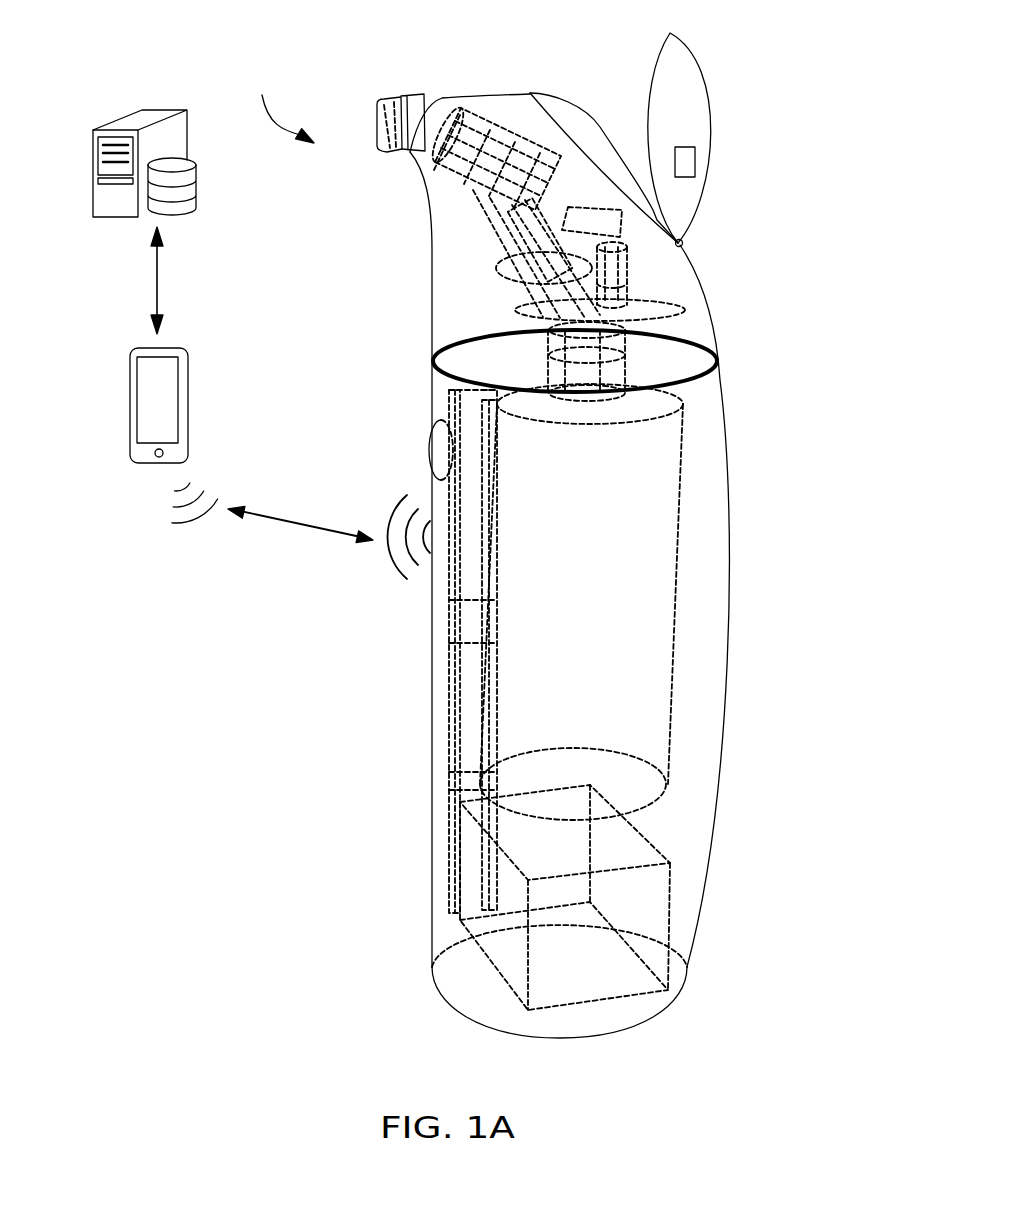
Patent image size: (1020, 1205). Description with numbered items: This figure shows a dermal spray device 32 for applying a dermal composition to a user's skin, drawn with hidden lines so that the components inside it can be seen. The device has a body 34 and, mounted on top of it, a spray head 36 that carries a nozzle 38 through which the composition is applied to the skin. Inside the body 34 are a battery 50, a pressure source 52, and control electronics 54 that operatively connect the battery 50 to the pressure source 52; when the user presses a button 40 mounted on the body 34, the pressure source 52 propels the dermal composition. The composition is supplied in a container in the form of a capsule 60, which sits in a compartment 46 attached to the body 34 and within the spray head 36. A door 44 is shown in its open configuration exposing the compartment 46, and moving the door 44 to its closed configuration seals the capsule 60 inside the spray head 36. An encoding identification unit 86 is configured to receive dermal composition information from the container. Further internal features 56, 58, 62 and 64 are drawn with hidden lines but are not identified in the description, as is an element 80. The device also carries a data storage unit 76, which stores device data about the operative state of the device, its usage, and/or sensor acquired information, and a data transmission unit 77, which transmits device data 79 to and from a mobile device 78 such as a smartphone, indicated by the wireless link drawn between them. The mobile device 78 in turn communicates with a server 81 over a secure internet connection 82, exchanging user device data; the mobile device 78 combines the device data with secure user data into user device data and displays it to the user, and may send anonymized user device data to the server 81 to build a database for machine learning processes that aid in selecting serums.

The dermal spray device 32 is at (279, 99).
The body 34 is at (700, 712).
The spray head 36 is at (440, 282).
The nozzle 38 is at (398, 98).
The button 40 is at (428, 445).
The door 44 is at (695, 122).
The compartment 46 is at (540, 96).
The battery 50 is at (653, 963).
The pressure source 52 is at (637, 752).
The control electronics 54 is at (455, 740).
The seal 56 is at (640, 375).
The valve 58 is at (645, 278).
The capsule 60 is at (597, 143).
The hinge 62 is at (655, 228).
The ring 64 is at (700, 338).
The data storage unit 76 is at (462, 792).
The data transmission unit 77 is at (455, 585).
The mobile device 78 is at (188, 402).
The device data 79 is at (307, 527).
The sensor 80 is at (455, 630).
The server 81 is at (198, 200).
The secure internet connection 82 is at (158, 285).
The encoding identification unit 86 is at (696, 165).